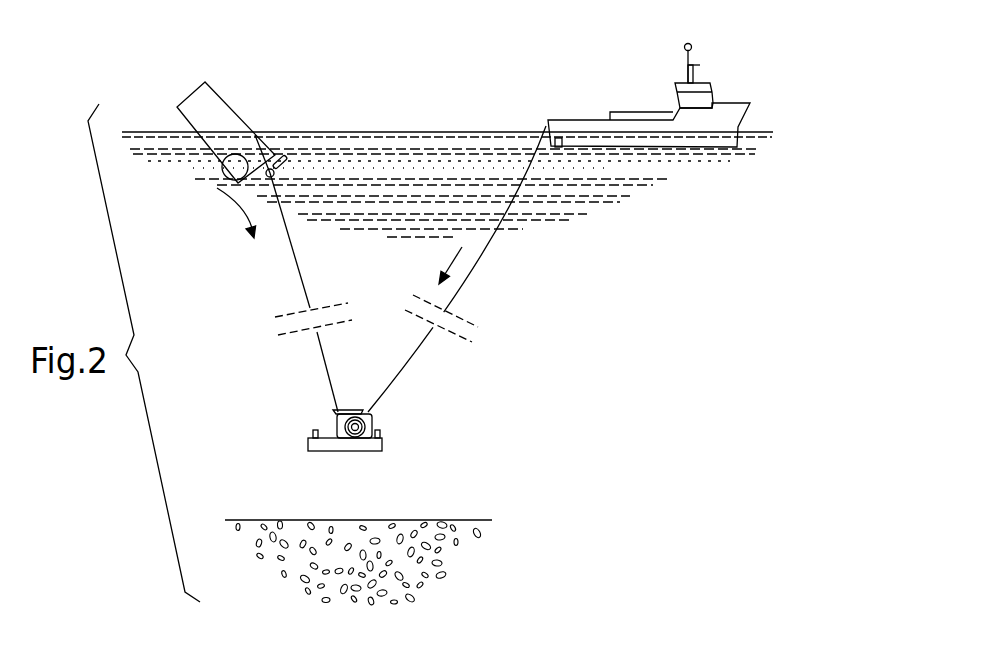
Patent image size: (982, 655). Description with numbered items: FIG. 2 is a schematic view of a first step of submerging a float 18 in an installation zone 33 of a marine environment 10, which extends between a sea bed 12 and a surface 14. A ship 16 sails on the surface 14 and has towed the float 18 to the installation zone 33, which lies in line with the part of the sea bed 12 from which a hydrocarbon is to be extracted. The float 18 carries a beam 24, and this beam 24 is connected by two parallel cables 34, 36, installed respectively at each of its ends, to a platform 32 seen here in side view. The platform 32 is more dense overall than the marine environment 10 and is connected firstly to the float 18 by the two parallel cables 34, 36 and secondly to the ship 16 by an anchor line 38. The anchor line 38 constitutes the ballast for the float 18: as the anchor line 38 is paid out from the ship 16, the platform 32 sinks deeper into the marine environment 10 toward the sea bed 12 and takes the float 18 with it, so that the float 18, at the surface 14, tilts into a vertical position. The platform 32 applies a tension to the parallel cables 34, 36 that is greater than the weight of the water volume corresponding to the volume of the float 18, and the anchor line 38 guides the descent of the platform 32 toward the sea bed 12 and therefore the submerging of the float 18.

The marine environment 10 is at (470, 412).
The sea bed 12 is at (443, 520).
The surface 14 is at (343, 132).
The ship 16 is at (611, 75).
The float 18 is at (226, 112).
The beam 24 is at (255, 135).
The platform 32 is at (323, 451).
The installation zone 33 is at (422, 93).
The parallel cable 34 is at (305, 287).
The parallel cable 36 is at (300, 268).
The anchor line 38 is at (482, 257).